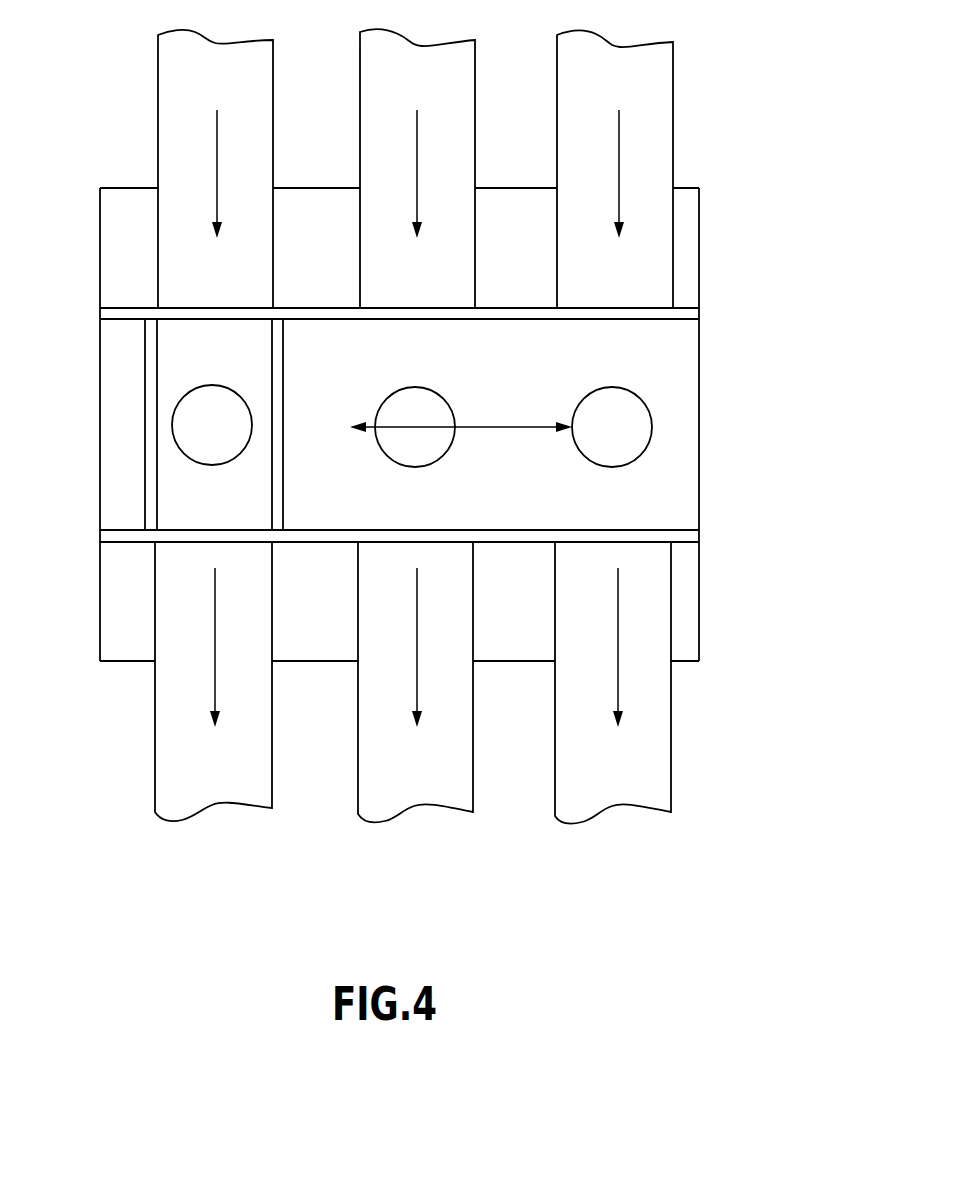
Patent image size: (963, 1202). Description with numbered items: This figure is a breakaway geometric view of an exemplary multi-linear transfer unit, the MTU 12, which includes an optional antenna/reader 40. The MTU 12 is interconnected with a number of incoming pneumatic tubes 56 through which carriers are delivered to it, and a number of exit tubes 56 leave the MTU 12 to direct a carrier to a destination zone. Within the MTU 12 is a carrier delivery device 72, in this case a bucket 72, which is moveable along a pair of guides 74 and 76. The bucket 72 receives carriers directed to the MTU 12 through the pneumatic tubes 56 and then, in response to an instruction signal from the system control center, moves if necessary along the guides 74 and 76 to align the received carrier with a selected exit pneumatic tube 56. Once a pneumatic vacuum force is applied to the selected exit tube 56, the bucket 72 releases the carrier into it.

The multi-linear transfer unit 12 is at (708, 632).
The antenna/reader 40 is at (216, 386).
The pneumatic tubes 56 is at (275, 135).
The carrier delivery device 72 is at (145, 420).
The guide 74 is at (692, 545).
The guide 76 is at (692, 310).